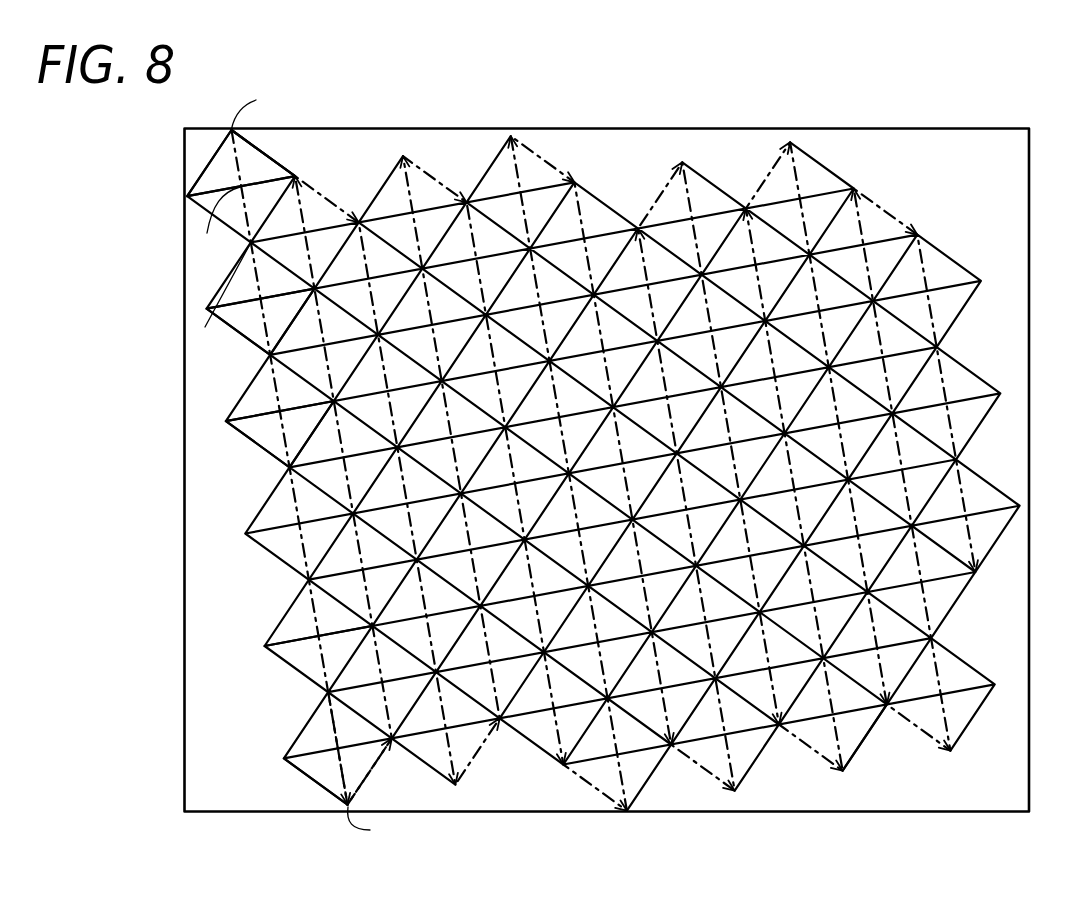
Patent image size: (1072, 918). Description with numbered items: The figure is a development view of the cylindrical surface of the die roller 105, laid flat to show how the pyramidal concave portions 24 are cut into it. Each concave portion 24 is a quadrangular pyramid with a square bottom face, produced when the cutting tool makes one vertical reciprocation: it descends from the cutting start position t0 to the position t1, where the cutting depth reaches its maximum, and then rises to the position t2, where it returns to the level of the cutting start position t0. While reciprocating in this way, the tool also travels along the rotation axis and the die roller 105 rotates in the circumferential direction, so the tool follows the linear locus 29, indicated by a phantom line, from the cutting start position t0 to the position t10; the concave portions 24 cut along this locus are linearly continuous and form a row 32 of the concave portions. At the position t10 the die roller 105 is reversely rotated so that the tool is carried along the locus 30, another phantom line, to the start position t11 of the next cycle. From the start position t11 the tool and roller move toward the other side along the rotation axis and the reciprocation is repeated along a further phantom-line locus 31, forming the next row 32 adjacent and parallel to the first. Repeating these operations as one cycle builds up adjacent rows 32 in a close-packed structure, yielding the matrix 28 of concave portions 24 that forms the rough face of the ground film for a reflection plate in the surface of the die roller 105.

The concave portion 24 is at (262, 170).
The matrix 28 is at (887, 752).
The locus 29 is at (315, 628).
The locus 30 is at (365, 782).
The locus 31 is at (378, 670).
The row of concave portions 32 is at (354, 186).
The die roller 105 is at (920, 167).
The cutting start position t0 is at (256, 108).
The position t1 is at (217, 225).
The position t2 is at (223, 302).
The position t10 is at (382, 826).
The start position t11 is at (414, 778).